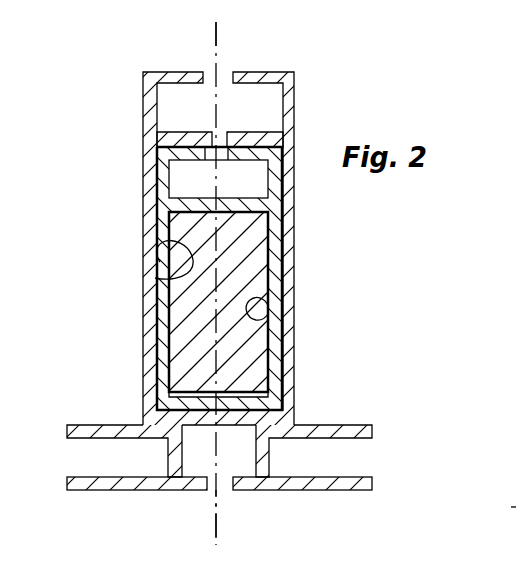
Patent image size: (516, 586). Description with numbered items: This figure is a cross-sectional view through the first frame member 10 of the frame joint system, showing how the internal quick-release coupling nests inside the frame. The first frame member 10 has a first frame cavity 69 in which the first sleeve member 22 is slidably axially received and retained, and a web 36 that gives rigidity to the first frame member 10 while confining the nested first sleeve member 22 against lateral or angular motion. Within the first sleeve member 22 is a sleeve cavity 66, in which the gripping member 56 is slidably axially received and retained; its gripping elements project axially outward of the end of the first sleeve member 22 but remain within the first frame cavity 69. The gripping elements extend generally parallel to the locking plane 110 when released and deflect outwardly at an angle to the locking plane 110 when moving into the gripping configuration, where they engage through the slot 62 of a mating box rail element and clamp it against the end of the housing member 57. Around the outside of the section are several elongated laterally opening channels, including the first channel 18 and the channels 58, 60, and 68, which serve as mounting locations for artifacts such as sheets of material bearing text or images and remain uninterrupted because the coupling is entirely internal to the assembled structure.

The first frame member 10 is at (294, 362).
The first channel 18 is at (350, 453).
The first sleeve member 22 is at (274, 279).
The web 36 is at (205, 132).
The gripping member 56 is at (248, 232).
The housing member 57 is at (515, 507).
The laterally opening channel 58 is at (140, 454).
The laterally opening channel 60 is at (220, 40).
The slot 62 is at (222, 153).
The sleeve cavity 66 is at (268, 312).
The laterally opening channel 68 is at (223, 480).
The first frame cavity 69 is at (155, 278).
The locking plane 110 is at (213, 43).